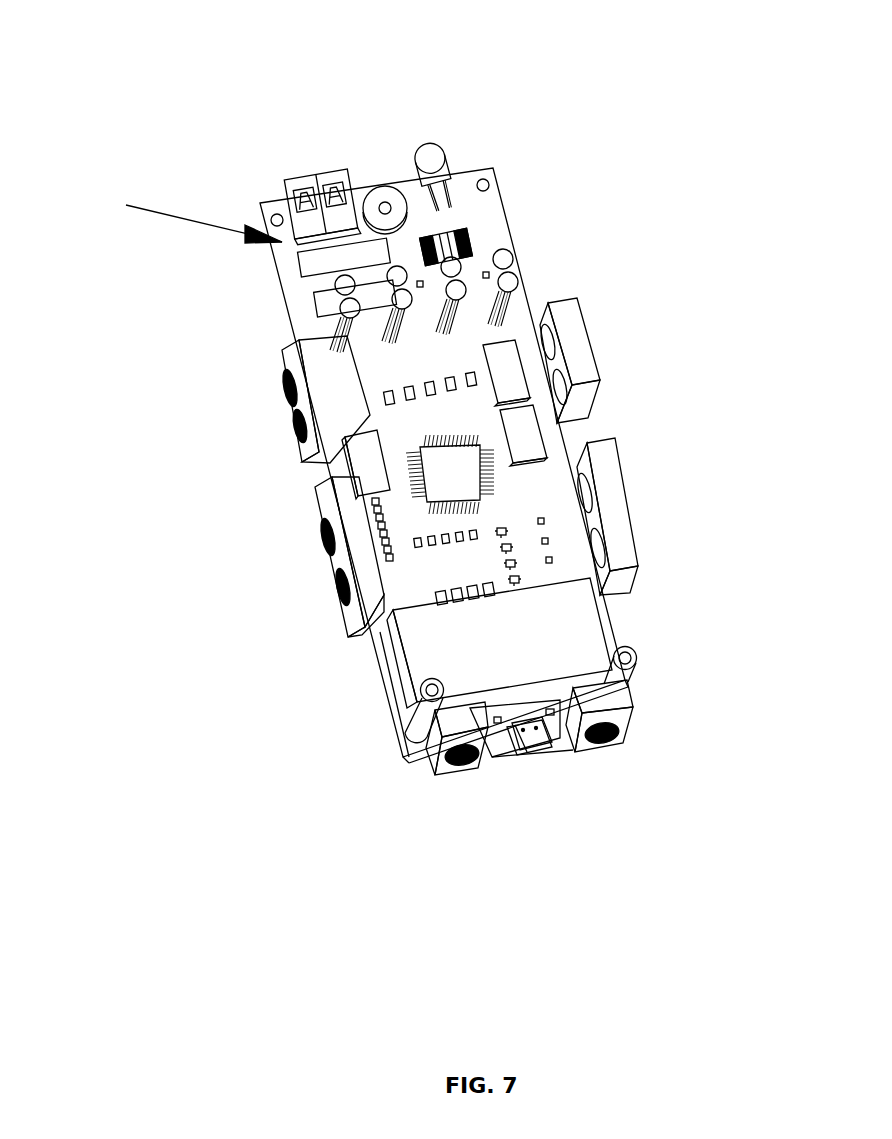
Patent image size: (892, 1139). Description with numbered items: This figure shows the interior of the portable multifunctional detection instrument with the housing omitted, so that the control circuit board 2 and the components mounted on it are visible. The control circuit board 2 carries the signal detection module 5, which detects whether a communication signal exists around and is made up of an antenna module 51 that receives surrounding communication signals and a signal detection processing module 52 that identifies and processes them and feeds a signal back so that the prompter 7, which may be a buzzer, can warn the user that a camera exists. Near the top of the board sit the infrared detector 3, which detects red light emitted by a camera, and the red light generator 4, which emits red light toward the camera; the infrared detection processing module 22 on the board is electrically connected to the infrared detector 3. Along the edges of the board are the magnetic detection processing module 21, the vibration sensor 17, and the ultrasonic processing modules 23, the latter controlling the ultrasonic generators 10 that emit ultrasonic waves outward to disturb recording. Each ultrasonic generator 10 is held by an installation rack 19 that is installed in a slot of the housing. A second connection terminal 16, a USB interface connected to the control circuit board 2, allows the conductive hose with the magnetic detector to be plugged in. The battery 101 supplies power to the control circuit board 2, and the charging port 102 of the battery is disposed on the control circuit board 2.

The control circuit board 2 is at (605, 622).
The infrared detector 3 is at (435, 162).
The red light generator 4 is at (497, 276).
The signal detection module 5 is at (189, 212).
The prompter 7 is at (385, 202).
The ultrasonic generator 10 is at (325, 532).
The second connection terminal 16 is at (310, 177).
The vibration sensor 17 is at (505, 368).
The installation rack 19 is at (363, 575).
The magnetic detection processing module 21 is at (355, 387).
The infrared detection processing module 22 is at (447, 246).
The ultrasonic processing module 23 is at (367, 463).
The antenna module 51 is at (320, 253).
The signal detection processing module 52 is at (323, 303).
The battery 101 is at (430, 668).
The charging port 102 is at (527, 742).